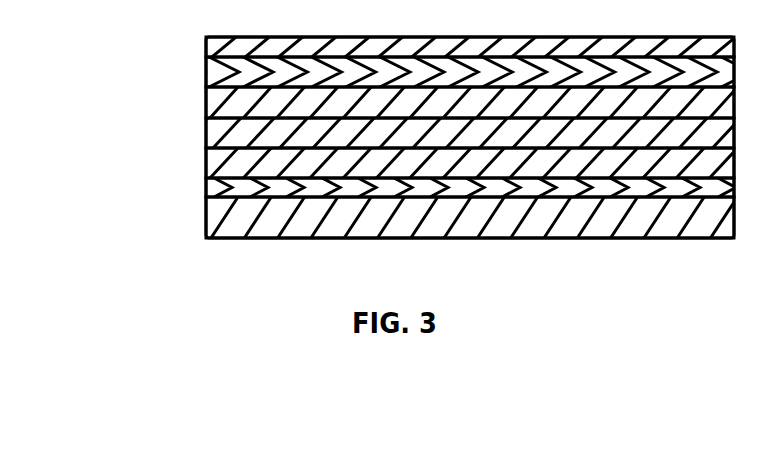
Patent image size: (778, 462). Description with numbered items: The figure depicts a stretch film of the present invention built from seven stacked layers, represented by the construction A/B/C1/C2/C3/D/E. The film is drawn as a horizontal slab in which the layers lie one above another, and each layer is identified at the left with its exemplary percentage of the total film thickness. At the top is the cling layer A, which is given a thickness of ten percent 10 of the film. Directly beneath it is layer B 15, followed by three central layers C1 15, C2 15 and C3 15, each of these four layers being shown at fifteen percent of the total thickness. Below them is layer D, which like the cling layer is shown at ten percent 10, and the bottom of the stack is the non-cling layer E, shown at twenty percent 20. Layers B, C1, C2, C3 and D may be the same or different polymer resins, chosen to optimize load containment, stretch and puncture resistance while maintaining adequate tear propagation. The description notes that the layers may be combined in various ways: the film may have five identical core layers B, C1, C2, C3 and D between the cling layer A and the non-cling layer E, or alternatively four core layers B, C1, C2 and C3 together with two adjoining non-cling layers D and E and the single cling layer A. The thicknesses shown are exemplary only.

The percentage thickness of ten percent 10 is at (406, 120).
The percentage thickness of fifteen percent 15 is at (408, 118).
The percentage thickness of twenty percent 20 is at (408, 217).
The cling layer A is at (406, 45).
The core layer B is at (397, 72).
The core layer C1 is at (406, 103).
The core layer C2 is at (408, 134).
The core layer C3 is at (406, 164).
The layer D is at (390, 192).
The non-cling layer E is at (408, 217).